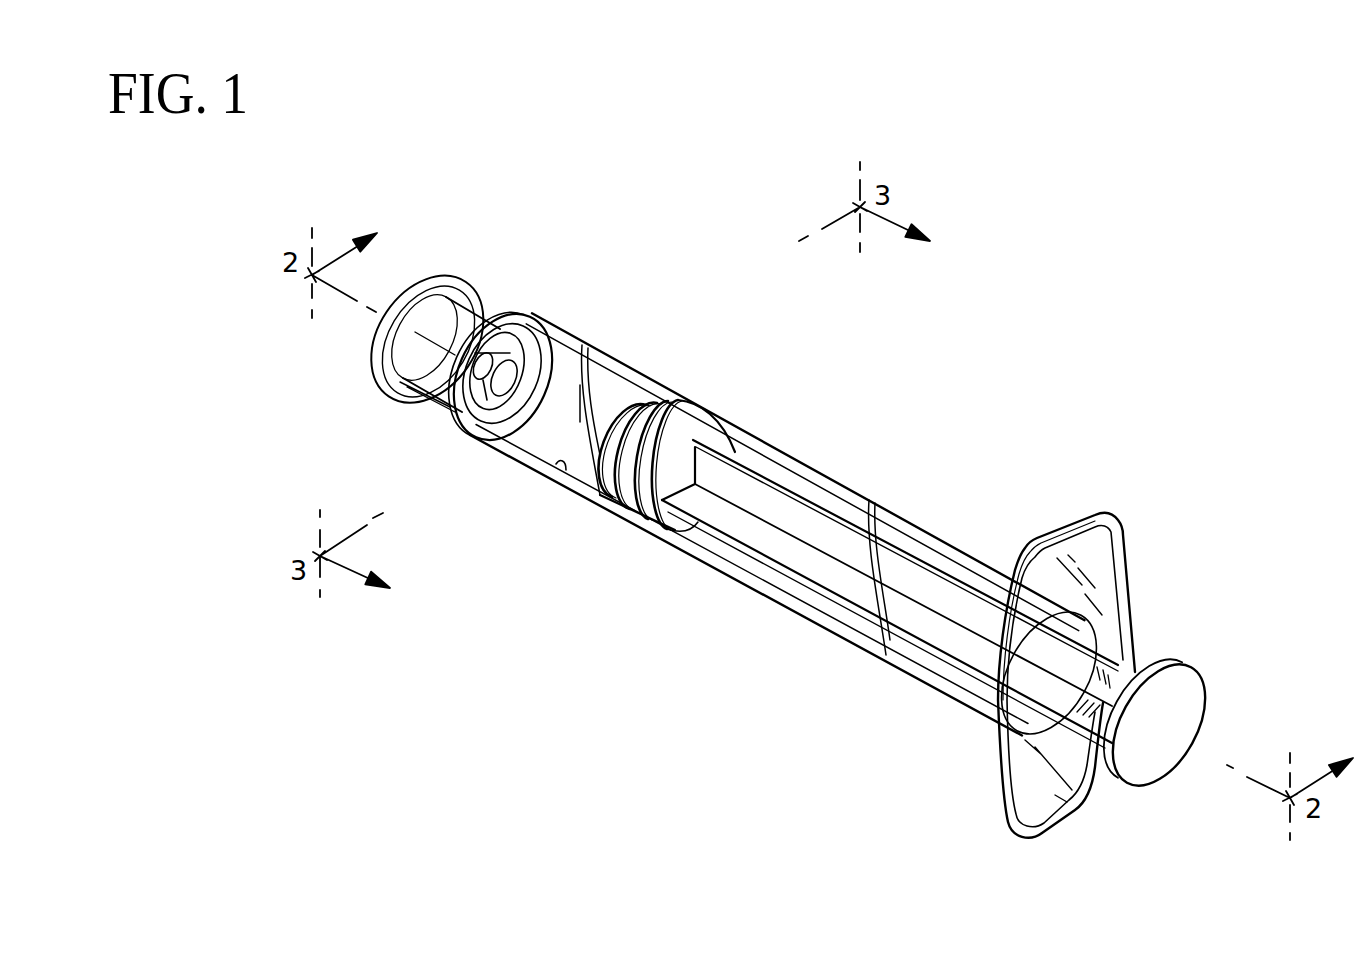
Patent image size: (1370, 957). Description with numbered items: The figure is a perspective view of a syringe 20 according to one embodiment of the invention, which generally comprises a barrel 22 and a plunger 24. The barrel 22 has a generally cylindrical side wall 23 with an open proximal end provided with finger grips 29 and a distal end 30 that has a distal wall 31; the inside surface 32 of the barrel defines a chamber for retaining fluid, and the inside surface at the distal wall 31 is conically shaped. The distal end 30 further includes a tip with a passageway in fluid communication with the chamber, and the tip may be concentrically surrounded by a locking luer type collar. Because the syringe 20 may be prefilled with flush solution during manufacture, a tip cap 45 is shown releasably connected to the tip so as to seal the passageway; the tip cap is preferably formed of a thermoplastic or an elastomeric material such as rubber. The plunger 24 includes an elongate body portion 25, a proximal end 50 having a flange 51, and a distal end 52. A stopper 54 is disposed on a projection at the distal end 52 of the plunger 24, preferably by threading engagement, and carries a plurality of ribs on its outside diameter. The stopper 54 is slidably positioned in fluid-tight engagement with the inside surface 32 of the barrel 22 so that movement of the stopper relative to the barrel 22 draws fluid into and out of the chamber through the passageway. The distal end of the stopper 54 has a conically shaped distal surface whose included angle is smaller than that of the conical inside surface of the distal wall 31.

The syringe 20 is at (931, 528).
The barrel 22 is at (784, 531).
The side wall 23 is at (650, 538).
The plunger 24 is at (890, 569).
The elongate body portion 25 is at (860, 568).
The finger grips 29 is at (1078, 522).
The distal end 30 is at (466, 438).
The distal wall 31 is at (546, 351).
The inside surface 32 is at (556, 464).
The tip cap 45 is at (378, 372).
The proximal end 50 is at (1183, 671).
The flange 51 is at (1186, 687).
The distal end 52 is at (696, 395).
The stopper 54 is at (663, 417).